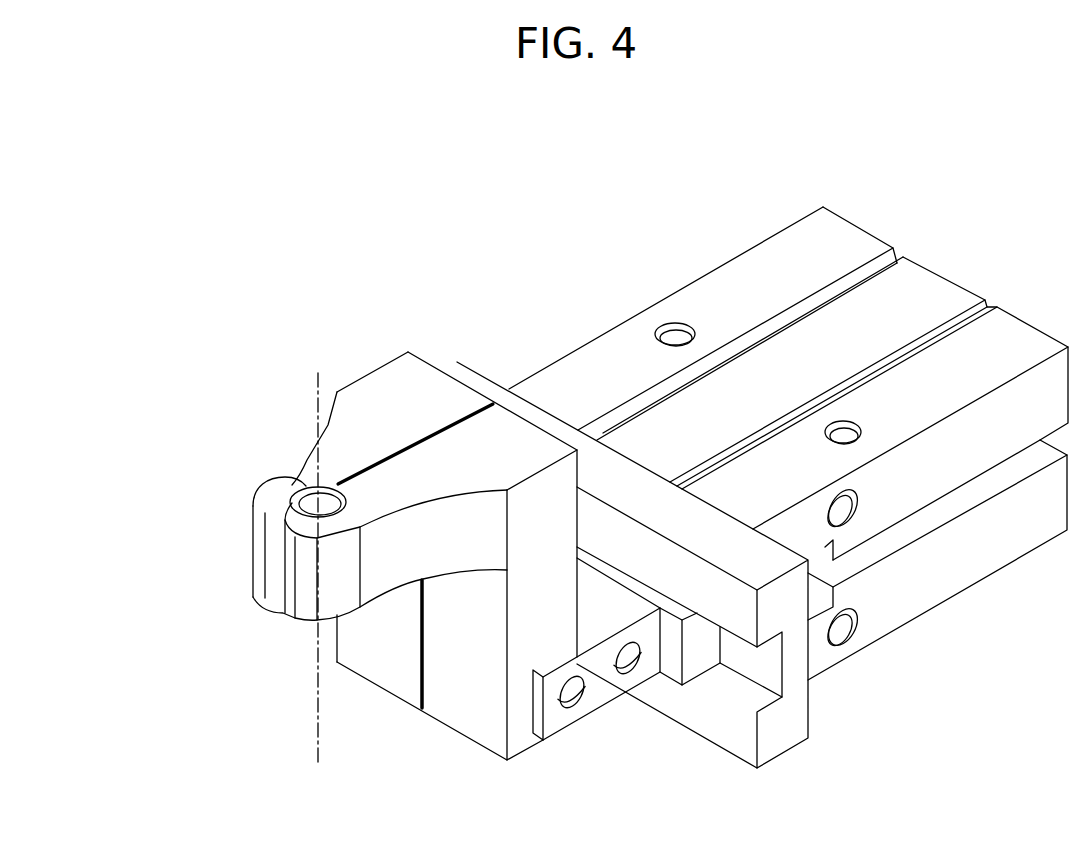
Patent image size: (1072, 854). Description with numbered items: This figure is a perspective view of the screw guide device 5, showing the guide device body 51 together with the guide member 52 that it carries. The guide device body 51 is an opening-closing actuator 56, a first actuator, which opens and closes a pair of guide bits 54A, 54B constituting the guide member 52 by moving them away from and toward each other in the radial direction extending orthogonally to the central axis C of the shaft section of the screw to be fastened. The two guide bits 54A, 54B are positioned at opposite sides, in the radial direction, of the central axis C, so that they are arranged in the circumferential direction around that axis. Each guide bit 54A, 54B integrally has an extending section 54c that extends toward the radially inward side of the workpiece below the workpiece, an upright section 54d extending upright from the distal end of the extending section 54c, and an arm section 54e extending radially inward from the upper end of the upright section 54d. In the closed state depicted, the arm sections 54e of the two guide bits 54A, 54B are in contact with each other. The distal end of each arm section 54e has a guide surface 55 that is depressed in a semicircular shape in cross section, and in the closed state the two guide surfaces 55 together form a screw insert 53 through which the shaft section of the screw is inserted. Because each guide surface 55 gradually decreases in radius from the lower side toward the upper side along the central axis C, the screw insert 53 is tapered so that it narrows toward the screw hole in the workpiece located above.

The screw guide device 5 is at (863, 201).
The guide device body 51 is at (704, 277).
The opening-closing actuator 56 is at (762, 469).
The guide member 52 is at (383, 323).
The guide bit 54A is at (353, 440).
The guide bit 54B is at (447, 460).
The arm section 54e is at (288, 461).
The upright section 54d is at (405, 677).
The extending section 54c is at (523, 742).
The screw insert 53 is at (192, 463).
The guide surface 55 is at (292, 481).
The central axis C is at (317, 650).